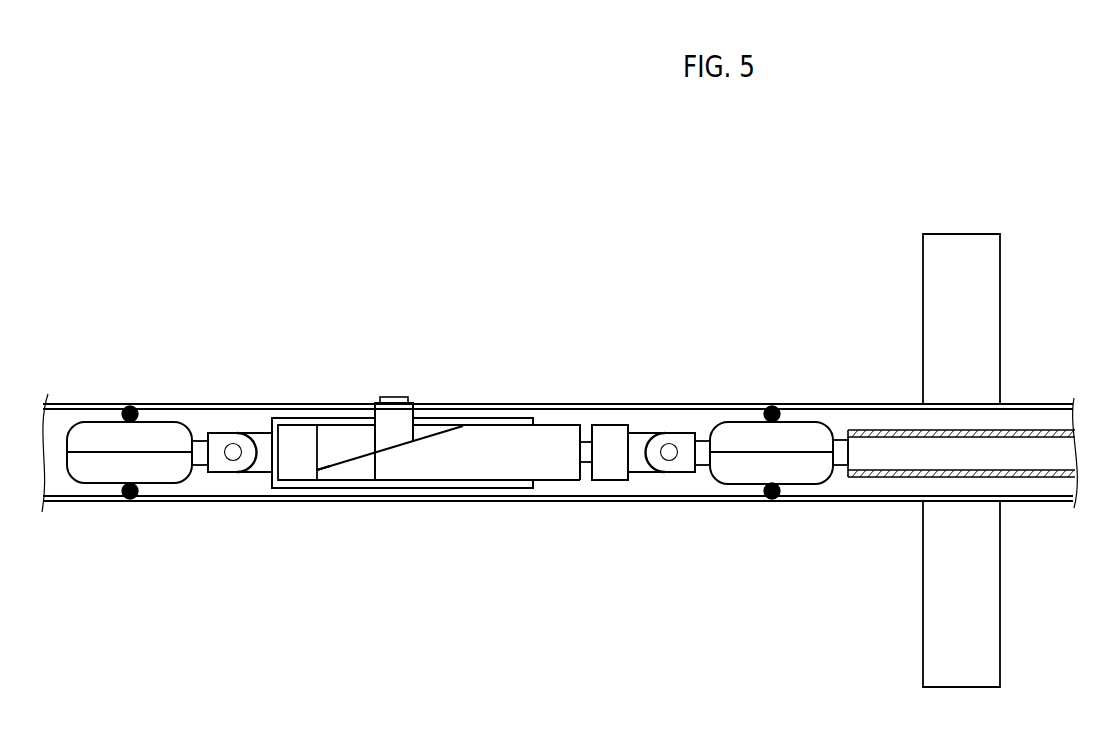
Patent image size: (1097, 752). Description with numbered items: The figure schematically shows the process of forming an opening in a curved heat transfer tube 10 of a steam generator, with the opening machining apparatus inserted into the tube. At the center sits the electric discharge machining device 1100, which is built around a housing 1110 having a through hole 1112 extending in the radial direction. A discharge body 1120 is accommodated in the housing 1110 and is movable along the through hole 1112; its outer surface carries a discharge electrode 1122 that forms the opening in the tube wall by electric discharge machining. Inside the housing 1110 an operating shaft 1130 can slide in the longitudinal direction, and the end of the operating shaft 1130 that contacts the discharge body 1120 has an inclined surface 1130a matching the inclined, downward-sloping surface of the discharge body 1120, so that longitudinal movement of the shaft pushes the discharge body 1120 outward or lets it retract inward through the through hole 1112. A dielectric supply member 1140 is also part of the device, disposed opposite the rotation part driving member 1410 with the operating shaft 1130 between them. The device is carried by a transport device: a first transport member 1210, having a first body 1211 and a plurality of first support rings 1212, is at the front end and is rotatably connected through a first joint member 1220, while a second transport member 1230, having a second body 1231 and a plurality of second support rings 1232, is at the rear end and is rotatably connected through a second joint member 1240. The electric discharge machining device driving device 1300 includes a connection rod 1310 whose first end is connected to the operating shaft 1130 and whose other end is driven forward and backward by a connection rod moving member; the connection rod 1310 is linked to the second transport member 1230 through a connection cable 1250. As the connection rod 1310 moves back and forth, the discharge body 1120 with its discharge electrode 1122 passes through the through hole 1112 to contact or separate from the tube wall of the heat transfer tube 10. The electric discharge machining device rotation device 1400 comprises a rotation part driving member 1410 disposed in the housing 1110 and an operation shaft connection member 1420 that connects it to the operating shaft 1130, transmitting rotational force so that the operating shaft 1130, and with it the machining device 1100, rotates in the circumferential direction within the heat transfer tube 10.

The heat transfer tube 10 is at (90, 502).
The electric discharge machining device 1100 is at (421, 439).
The housing 1110 is at (425, 447).
The through hole 1112 is at (410, 422).
The discharge body 1120 is at (381, 447).
The discharge electrode 1122 is at (370, 479).
The operating shaft 1130 is at (433, 465).
The inclined surface 1130a is at (332, 460).
The dielectric supply member 1140 is at (300, 440).
The first transport member 1210 is at (106, 392).
The first body 1211 is at (80, 440).
The first support rings 1212 is at (130, 412).
The first joint member 1220 is at (220, 433).
The second transport member 1230 is at (772, 392).
The second body 1231 is at (812, 434).
The second support rings 1232 is at (768, 410).
The second joint member 1240 is at (669, 432).
The connection cable 1250 is at (893, 430).
The electric discharge machining device driving device 1300 is at (972, 460).
The connection rod 1310 is at (1032, 450).
The electric discharge machining device rotation device 1400 is at (592, 528).
The rotation part driving member 1410 is at (612, 480).
The operation shaft connection member 1420 is at (588, 463).